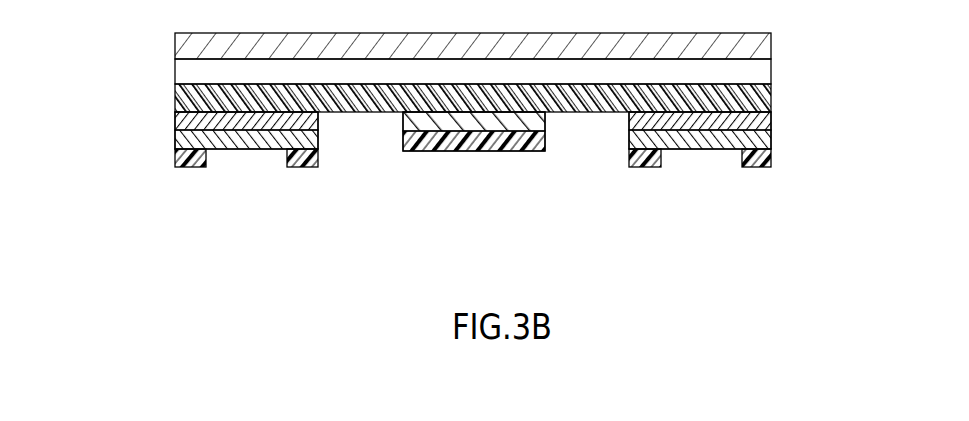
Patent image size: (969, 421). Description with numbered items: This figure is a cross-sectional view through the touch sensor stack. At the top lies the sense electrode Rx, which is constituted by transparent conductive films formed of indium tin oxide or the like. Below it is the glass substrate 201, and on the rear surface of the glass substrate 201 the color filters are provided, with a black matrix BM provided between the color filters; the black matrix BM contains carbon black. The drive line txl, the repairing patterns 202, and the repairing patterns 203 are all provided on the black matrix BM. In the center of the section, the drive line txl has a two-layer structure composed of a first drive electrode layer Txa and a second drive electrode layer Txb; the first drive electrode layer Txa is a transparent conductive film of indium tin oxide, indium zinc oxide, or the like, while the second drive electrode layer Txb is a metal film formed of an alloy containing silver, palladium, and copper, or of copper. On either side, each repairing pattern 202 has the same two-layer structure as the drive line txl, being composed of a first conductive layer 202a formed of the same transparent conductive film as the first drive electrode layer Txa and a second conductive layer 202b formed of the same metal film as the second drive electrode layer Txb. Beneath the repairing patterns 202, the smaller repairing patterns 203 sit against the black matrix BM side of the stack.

The sense electrode Rx is at (752, 50).
The glass substrate 201 is at (752, 73).
The black matrix BM is at (752, 100).
The repairing pattern 202 is at (95, 105).
The second conductive layer 202b is at (185, 120).
The first conductive layer 202a is at (183, 144).
The repairing pattern 203 is at (192, 167).
The first drive electrode layer Txa is at (455, 140).
The second drive electrode layer Txb is at (507, 118).
The drive line txl is at (533, 216).